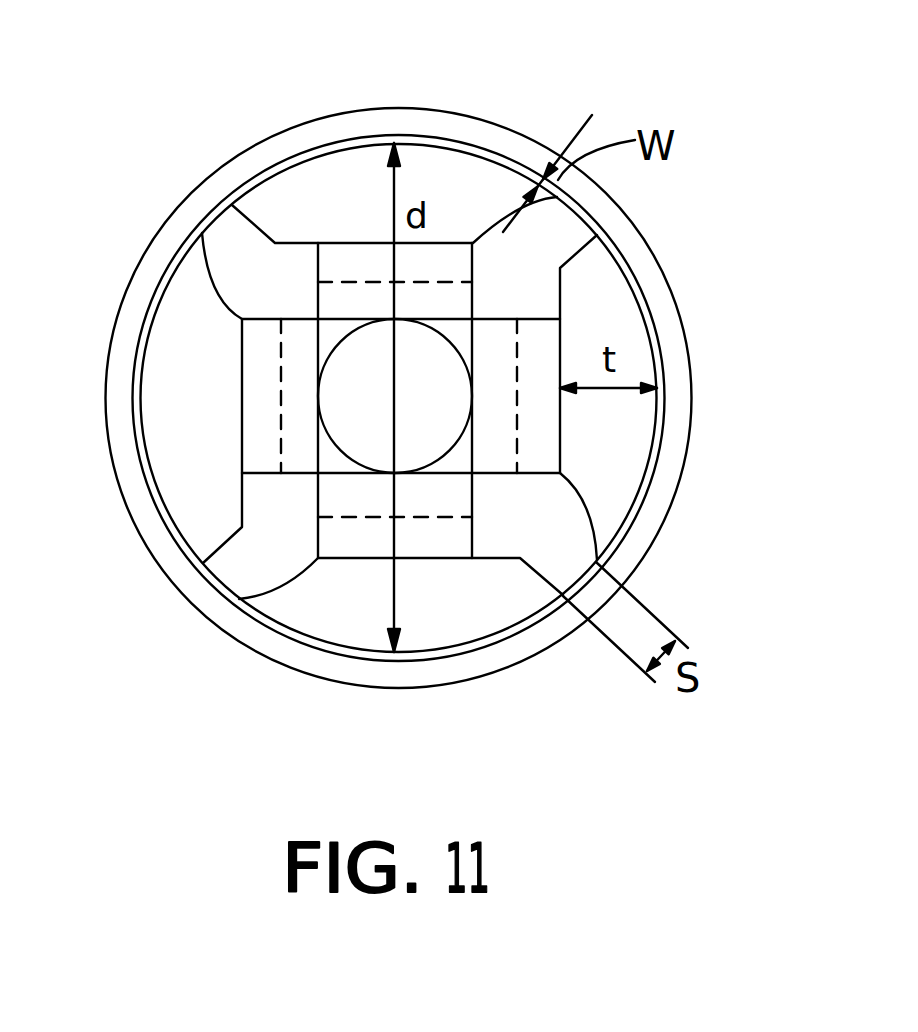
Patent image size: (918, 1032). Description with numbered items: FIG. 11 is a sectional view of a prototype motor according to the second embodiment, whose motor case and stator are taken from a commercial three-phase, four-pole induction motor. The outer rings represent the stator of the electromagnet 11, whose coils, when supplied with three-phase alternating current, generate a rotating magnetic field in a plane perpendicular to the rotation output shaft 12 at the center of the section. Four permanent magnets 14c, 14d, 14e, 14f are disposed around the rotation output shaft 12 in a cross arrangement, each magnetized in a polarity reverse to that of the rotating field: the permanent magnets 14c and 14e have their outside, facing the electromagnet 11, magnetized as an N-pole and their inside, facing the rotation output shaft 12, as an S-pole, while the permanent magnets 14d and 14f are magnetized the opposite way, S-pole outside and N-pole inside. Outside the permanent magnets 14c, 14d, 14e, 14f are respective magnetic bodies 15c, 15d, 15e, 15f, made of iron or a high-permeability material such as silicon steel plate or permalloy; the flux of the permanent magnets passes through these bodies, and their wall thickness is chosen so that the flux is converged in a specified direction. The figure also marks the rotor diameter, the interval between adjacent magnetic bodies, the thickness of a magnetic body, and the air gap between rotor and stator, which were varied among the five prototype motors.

The electromagnet 11 is at (473, 115).
The rotation output shaft 12 is at (350, 374).
The permanent magnet 14c is at (317, 265).
The permanent magnet 14d is at (543, 345).
The permanent magnet 14e is at (318, 535).
The permanent magnet 14f is at (248, 338).
The magnetic body 15c is at (348, 165).
The magnetic body 15d is at (630, 453).
The magnetic body 15e is at (318, 622).
The magnetic body 15f is at (182, 463).